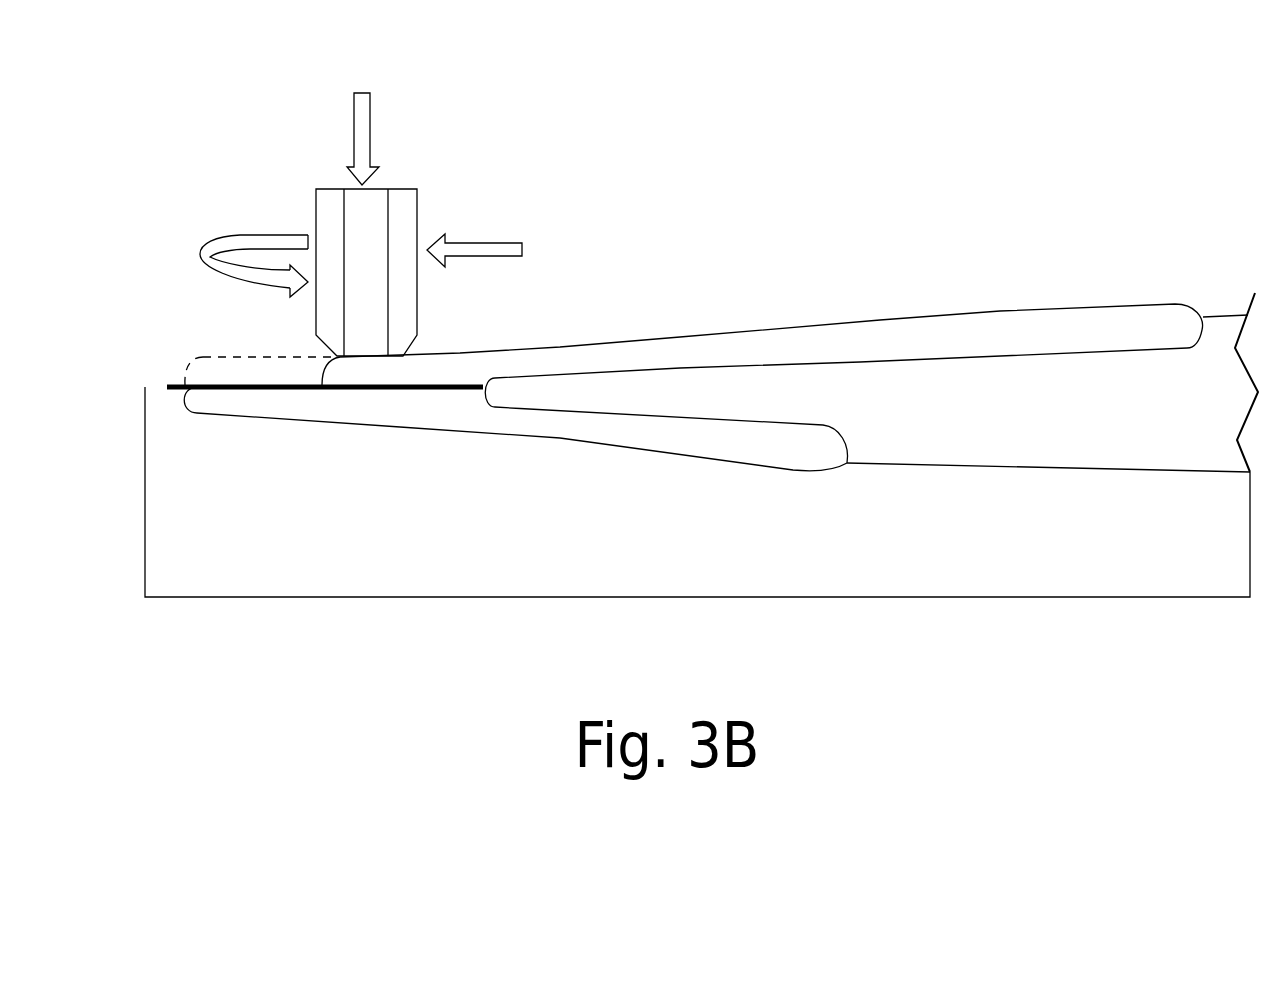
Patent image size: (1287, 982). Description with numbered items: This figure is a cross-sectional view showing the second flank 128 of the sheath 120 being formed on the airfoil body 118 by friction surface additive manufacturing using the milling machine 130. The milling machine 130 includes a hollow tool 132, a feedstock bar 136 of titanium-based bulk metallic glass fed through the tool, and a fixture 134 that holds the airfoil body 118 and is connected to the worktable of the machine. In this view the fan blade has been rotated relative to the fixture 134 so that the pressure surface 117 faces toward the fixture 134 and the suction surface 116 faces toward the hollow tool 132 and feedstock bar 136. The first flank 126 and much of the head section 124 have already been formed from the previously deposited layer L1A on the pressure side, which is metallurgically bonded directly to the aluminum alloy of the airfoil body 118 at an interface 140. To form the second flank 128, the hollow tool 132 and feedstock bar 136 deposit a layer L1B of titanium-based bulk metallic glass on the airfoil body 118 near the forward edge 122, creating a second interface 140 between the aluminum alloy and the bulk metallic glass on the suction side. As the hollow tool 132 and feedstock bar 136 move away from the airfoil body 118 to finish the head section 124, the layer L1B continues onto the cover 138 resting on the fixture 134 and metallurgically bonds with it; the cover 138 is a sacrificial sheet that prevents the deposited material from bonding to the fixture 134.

The milling machine 130 is at (690, 143).
The suction surface 116 is at (1178, 294).
The pressure surface 117 is at (1200, 480).
The airfoil body 118 is at (1097, 430).
The sheath 120 is at (287, 403).
The forward edge 122 is at (510, 393).
The head section 124 is at (452, 402).
The first flank 126 is at (785, 453).
The second flank 128 is at (958, 337).
The hollow tool 132 is at (418, 208).
The fixture 134 is at (928, 573).
The feedstock bar 136 is at (362, 215).
The cover 138 is at (232, 385).
The interface 140 is at (802, 360).
The layer L1A is at (640, 437).
The layer L1B is at (708, 355).